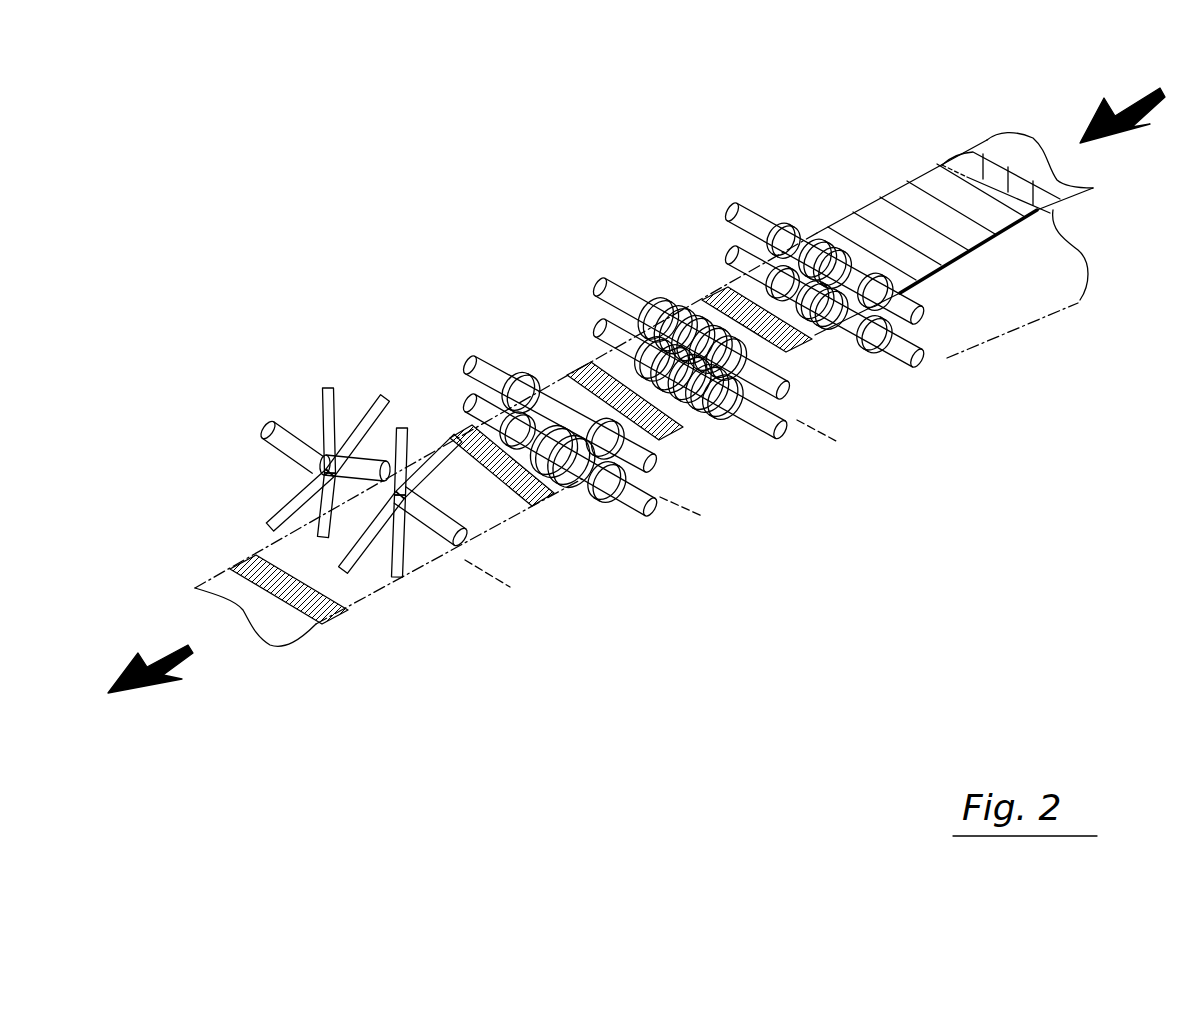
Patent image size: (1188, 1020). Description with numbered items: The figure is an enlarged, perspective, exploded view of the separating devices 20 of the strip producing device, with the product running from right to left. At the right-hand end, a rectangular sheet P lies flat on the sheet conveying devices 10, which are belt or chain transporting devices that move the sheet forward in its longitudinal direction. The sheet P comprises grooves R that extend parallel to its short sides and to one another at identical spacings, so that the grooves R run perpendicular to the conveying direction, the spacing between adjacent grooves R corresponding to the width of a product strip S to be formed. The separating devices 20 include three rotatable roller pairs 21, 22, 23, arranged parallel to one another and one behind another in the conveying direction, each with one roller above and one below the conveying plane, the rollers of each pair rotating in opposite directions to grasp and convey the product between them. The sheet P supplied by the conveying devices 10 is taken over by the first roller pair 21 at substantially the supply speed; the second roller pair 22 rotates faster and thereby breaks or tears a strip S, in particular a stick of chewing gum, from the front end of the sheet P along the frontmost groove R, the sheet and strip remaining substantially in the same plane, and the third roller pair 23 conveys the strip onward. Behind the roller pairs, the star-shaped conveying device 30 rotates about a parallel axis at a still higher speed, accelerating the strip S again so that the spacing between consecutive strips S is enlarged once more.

The sheet conveying devices 10 is at (1033, 283).
The separating devices 20 is at (490, 293).
The first roller pair 21 is at (882, 330).
The second roller pair 22 is at (755, 380).
The third roller pair 23 is at (632, 468).
The star-shaped conveying device 30 is at (408, 550).
The product strip S is at (236, 562).
The sheet P is at (930, 190).
The groove R is at (930, 195).